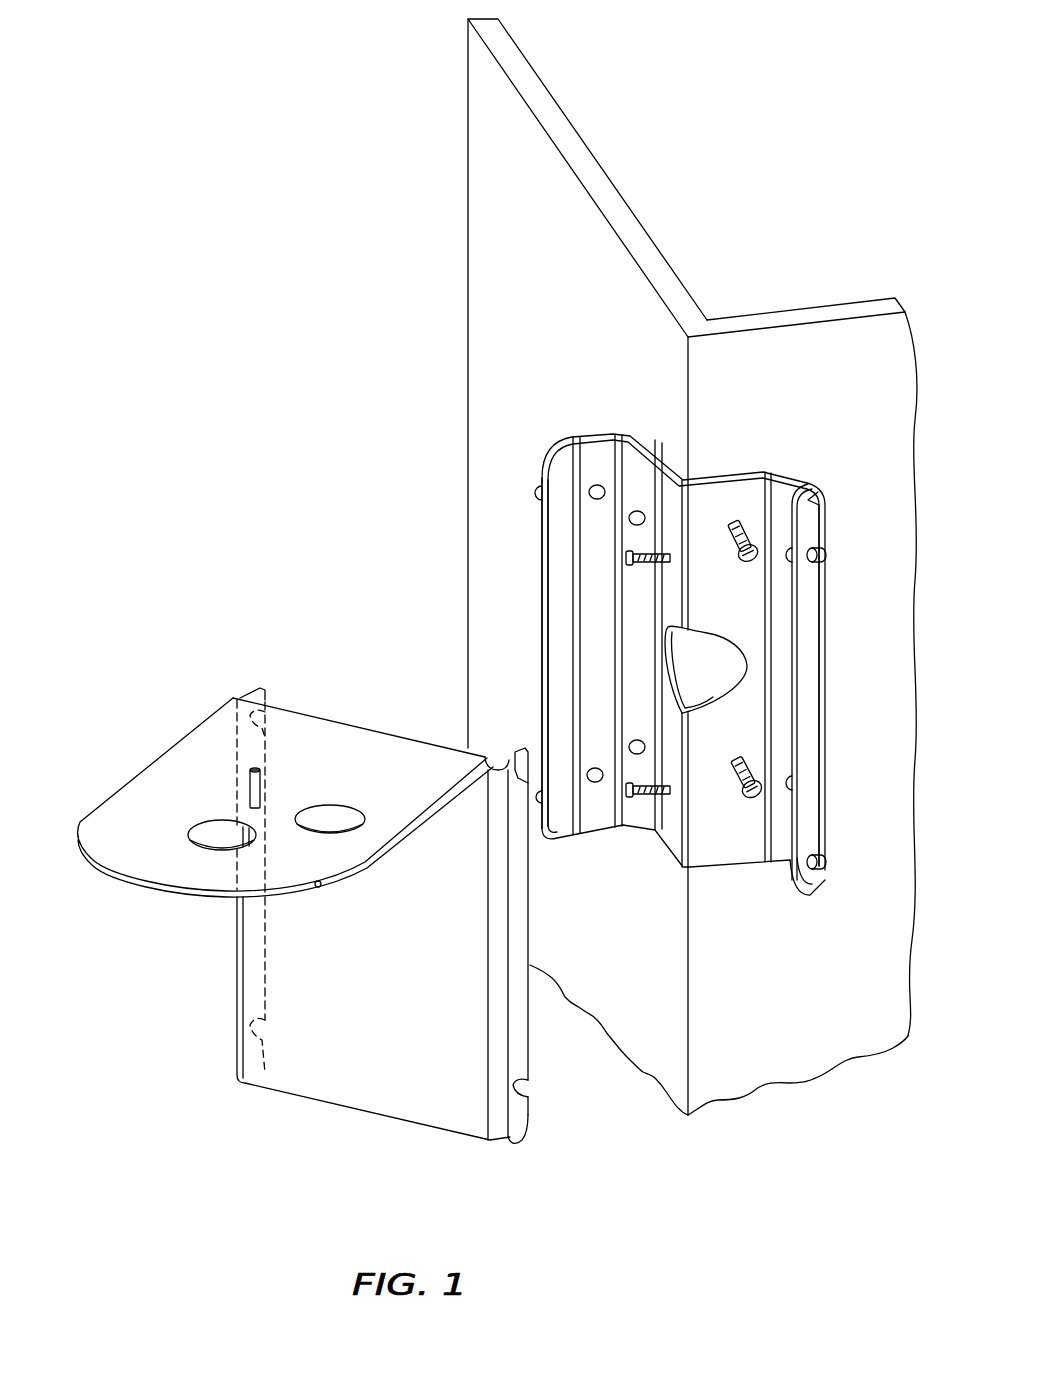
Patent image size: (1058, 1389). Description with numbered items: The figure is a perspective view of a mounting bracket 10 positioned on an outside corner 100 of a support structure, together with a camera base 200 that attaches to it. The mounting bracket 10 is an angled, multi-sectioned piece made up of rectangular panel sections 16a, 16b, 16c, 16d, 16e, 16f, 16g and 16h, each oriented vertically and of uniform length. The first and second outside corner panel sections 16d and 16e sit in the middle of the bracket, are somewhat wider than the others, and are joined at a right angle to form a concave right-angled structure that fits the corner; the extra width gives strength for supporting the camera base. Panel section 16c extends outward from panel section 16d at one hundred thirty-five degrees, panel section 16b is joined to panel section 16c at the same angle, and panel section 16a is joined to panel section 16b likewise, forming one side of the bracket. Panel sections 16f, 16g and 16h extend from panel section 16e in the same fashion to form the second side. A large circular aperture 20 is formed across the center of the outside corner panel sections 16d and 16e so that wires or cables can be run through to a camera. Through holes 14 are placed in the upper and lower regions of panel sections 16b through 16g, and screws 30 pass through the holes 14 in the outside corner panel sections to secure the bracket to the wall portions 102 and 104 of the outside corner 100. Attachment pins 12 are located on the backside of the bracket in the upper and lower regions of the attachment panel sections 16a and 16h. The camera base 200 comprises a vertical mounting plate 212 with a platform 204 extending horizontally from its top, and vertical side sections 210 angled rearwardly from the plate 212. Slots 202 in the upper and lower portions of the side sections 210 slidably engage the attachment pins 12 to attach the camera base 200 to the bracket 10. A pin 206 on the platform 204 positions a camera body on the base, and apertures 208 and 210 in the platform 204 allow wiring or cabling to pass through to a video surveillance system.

The mounting bracket 10 is at (705, 690).
The attachment pins 12 is at (535, 492).
The holes 14 is at (637, 510).
The attachment panel section 16a is at (562, 838).
The panel section 16b is at (598, 825).
The panel section 16c is at (640, 827).
The first outside corner panel section 16d is at (683, 867).
The second outside corner panel section 16e is at (727, 867).
The panel section 16f is at (782, 863).
The panel section 16g is at (813, 488).
The attachment panel section 16h is at (818, 890).
The circular aperture 20 is at (747, 665).
The screws 30 is at (627, 558).
The outside corner 100 is at (692, 567).
The wall portion 102 is at (587, 217).
The wall portion 104 is at (760, 342).
The camera base 200 is at (346, 914).
The slots 202 is at (517, 752).
The platform 204 is at (147, 860).
The pin 206 is at (250, 787).
The aperture 208 is at (188, 832).
The side sections 210 is at (243, 690).
The vertical mounting plate 212 is at (280, 980).